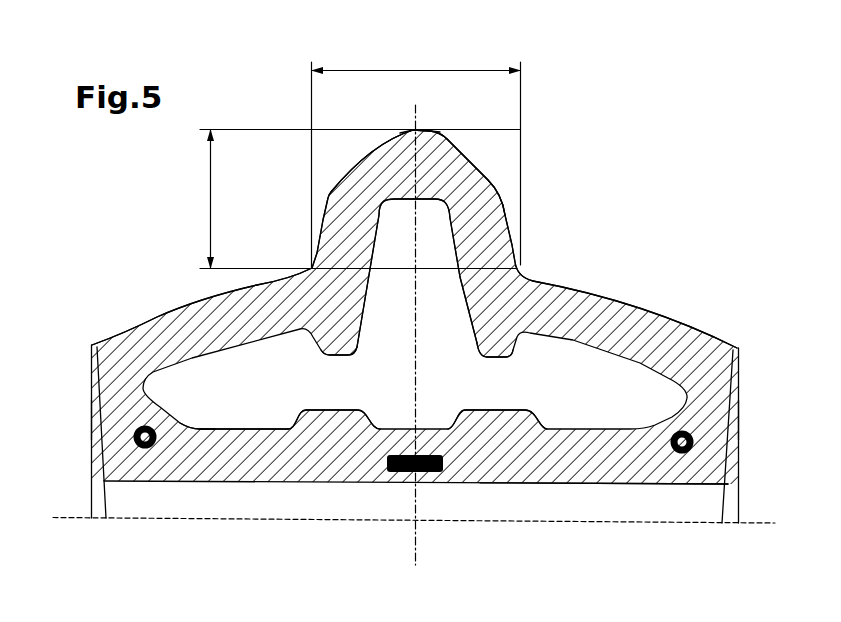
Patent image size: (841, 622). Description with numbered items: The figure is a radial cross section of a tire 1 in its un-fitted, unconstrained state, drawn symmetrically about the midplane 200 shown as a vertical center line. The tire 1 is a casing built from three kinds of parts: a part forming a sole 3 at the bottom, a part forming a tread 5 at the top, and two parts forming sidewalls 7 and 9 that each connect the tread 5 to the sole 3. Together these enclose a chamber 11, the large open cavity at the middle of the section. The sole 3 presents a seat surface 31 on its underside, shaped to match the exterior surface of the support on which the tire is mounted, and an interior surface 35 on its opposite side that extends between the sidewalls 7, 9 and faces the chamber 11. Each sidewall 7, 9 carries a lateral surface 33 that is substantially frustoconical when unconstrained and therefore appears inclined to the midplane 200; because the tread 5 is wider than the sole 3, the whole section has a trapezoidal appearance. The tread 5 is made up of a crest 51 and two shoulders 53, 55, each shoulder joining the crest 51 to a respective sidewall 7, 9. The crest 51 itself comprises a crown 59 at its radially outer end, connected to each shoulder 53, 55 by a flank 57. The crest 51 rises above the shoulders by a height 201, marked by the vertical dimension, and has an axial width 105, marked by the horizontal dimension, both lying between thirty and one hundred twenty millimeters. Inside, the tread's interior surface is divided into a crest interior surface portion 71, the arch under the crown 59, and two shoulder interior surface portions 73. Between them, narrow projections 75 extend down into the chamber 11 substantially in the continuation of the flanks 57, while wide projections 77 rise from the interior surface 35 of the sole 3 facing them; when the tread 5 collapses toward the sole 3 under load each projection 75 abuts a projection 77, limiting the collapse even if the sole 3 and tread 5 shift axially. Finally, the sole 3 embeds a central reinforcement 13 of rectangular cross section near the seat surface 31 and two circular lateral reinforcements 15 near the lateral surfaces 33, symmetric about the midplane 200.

The tire 1 is at (274, 90).
The sole 3 is at (620, 470).
The tread 5 is at (576, 305).
The sidewall 7 is at (126, 360).
The sidewall 9 is at (729, 347).
The chamber 11 is at (611, 382).
The central reinforcement 13 is at (372, 483).
The lateral reinforcement 15 is at (147, 452).
The seat surface 31 is at (572, 486).
The lateral surface 33 is at (91, 413).
The interior surface 35 is at (258, 427).
The crest 51 is at (463, 169).
The shoulder 53 is at (268, 310).
The shoulder 55 is at (668, 338).
The flank 57 is at (354, 193).
The crown 59 is at (432, 156).
The crest interior surface portion 71 is at (366, 290).
The shoulder interior surface portion 73 is at (197, 432).
The projection 75 is at (318, 342).
The projection 77 is at (340, 409).
The width of the crest 105 is at (412, 70).
The midplane 200 is at (416, 540).
The height of the crest 201 is at (208, 200).